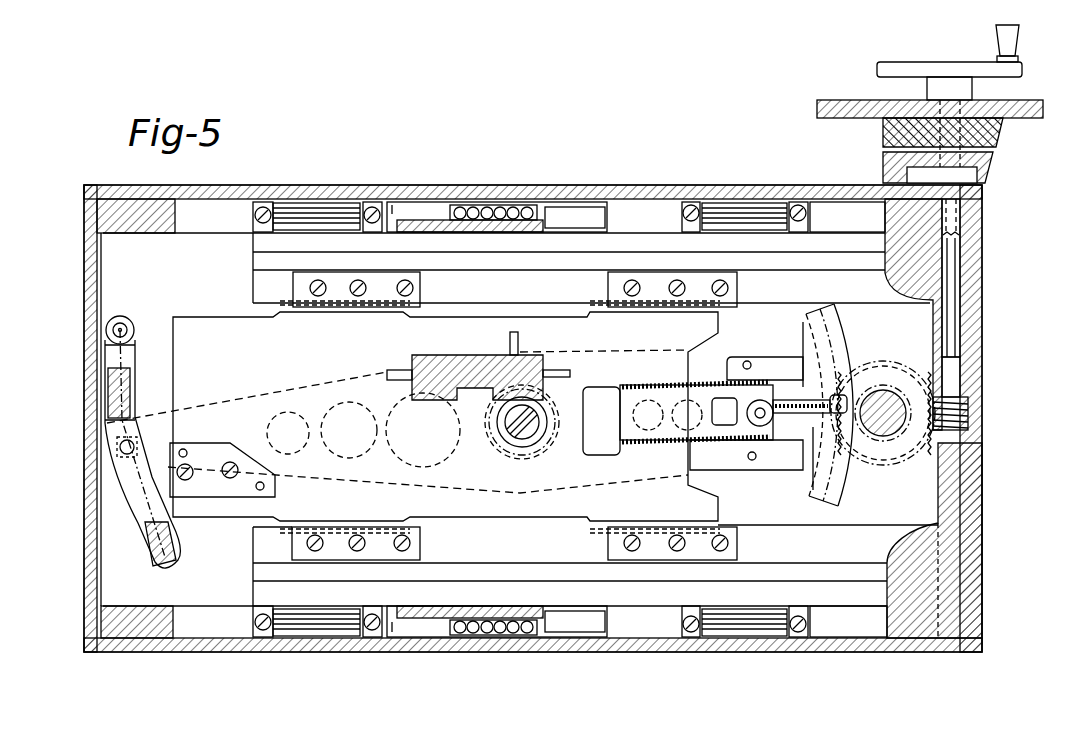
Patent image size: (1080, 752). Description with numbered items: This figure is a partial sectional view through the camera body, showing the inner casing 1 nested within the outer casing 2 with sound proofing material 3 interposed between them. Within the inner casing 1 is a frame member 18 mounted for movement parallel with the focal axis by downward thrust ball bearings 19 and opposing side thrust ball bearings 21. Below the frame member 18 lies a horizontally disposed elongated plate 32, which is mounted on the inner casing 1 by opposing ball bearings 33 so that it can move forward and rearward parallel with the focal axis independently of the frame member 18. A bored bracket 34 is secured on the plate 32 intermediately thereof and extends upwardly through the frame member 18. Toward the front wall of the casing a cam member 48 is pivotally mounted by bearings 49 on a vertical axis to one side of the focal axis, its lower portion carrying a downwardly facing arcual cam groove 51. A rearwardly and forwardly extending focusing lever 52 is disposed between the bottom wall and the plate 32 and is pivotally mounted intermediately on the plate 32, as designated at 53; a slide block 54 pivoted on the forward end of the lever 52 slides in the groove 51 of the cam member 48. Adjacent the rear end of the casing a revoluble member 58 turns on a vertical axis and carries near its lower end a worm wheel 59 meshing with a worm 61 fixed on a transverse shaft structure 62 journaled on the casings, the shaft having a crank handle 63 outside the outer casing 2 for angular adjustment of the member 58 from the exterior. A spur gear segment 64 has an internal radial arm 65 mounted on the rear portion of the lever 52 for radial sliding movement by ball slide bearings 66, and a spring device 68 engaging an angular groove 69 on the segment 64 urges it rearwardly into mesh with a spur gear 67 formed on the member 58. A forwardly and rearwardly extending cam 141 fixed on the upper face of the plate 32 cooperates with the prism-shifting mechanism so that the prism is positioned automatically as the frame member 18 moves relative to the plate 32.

The inner casing 1 is at (664, 186).
The outer casing 2 is at (826, 100).
The sound proofing material 3 is at (882, 136).
The frame member 18 is at (400, 208).
The downward thrust ball bearings 19 is at (302, 208).
The opposing side thrust ball bearings 21 is at (482, 212).
The plate 32 is at (514, 520).
The opposing ball bearings 33 is at (330, 300).
The bored bracket 34 is at (476, 355).
The cam member 48 is at (158, 556).
The bearings 49 is at (124, 325).
The arcual cam groove 51 is at (137, 516).
The lever 52 is at (145, 422).
The pivotal mounting of lever 53 is at (520, 452).
The slide block 54 is at (120, 450).
The revoluble member 58 is at (876, 398).
The worm wheel 59 is at (925, 452).
The worm 61 is at (970, 413).
The transverse shaft structure 62 is at (950, 306).
The crank handle 63 is at (998, 42).
The spur gear segment 64 is at (852, 460).
The internal radial arm 65 is at (778, 440).
The ball slide bearings 66 is at (755, 358).
The spur gear 67 is at (846, 394).
The spring device 68 is at (800, 390).
The angular groove 69 is at (818, 497).
The cam 141 is at (215, 444).